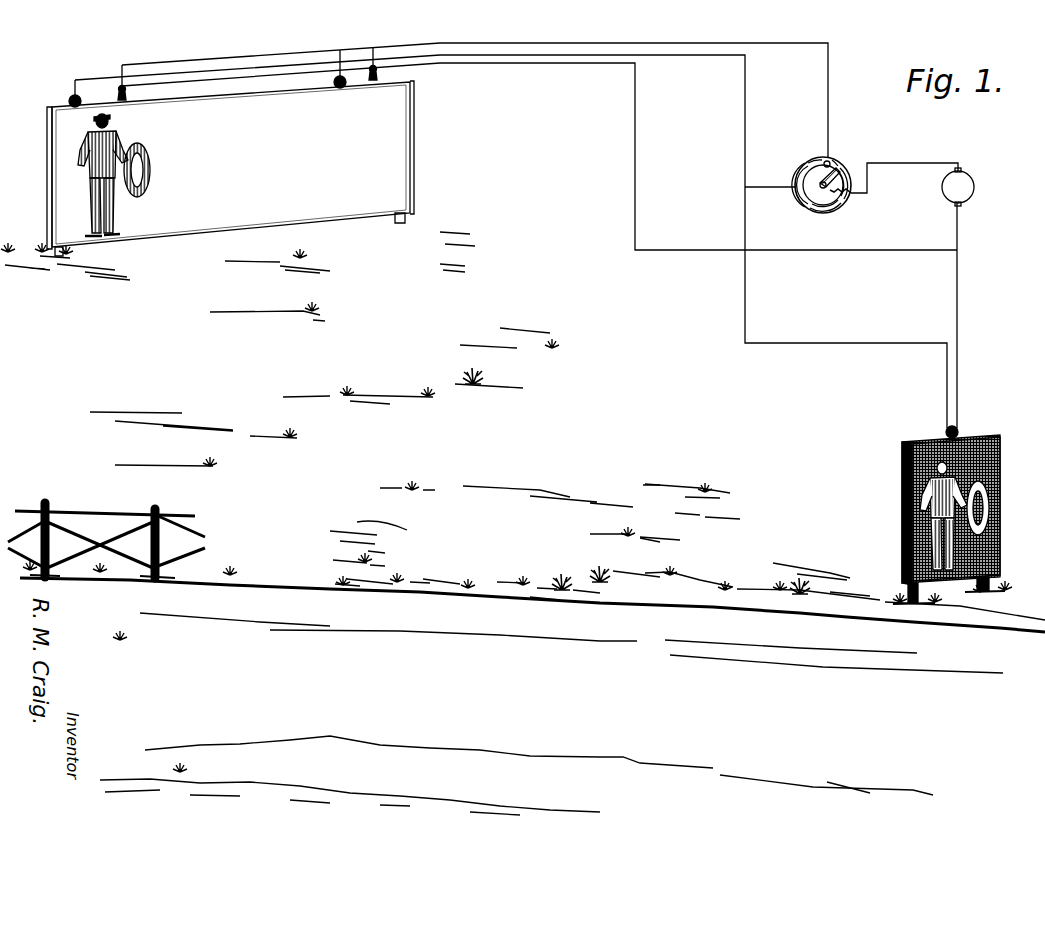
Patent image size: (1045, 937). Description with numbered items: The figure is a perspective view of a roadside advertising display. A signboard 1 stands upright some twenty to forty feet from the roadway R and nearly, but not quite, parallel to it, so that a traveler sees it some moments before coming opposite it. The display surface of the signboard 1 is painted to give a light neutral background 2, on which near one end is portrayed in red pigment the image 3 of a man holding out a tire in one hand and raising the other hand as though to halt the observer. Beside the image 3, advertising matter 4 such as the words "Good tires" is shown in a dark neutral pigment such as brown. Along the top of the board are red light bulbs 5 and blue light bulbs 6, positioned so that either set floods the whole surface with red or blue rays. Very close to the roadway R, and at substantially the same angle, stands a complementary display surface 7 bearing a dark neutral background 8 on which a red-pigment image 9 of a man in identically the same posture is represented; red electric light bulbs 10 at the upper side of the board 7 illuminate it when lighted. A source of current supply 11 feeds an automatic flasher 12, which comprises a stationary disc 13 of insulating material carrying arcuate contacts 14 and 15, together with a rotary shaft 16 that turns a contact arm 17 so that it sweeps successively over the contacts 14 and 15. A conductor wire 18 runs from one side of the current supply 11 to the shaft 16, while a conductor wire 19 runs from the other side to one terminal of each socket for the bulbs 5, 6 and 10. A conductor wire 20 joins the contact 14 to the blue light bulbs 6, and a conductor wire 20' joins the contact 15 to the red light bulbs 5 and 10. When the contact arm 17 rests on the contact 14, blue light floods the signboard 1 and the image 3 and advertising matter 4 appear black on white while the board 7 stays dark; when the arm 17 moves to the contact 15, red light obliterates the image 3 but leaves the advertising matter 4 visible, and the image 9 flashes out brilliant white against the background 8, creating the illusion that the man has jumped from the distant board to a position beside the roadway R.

The signboard 1 is at (399, 142).
The light neutral background 2 is at (403, 170).
The image of a man holding a tire 3 is at (117, 203).
The advertising matter 4 is at (342, 130).
The red light bulbs 5 is at (70, 101).
The blue light bulbs 6 is at (131, 95).
The complementary display surface 7 is at (981, 436).
The dark neutral background 8 is at (1000, 447).
The image of a man 9 is at (1002, 477).
The red electric light bulbs 10 is at (946, 431).
The source of current supply 11 is at (974, 186).
The automatic flasher 12 is at (812, 178).
The stationary disc 13 is at (815, 198).
The arcuate contact 14 is at (843, 199).
The arcuate contact 15 is at (797, 177).
The rotary shaft 16 is at (830, 162).
The contact arm 17 is at (838, 173).
The conductor wire 18 is at (910, 164).
The conductor wire 19 is at (963, 231).
The conductor wire 20 is at (493, 100).
The conductor wire 20' is at (511, 241).
The roadway R is at (435, 598).